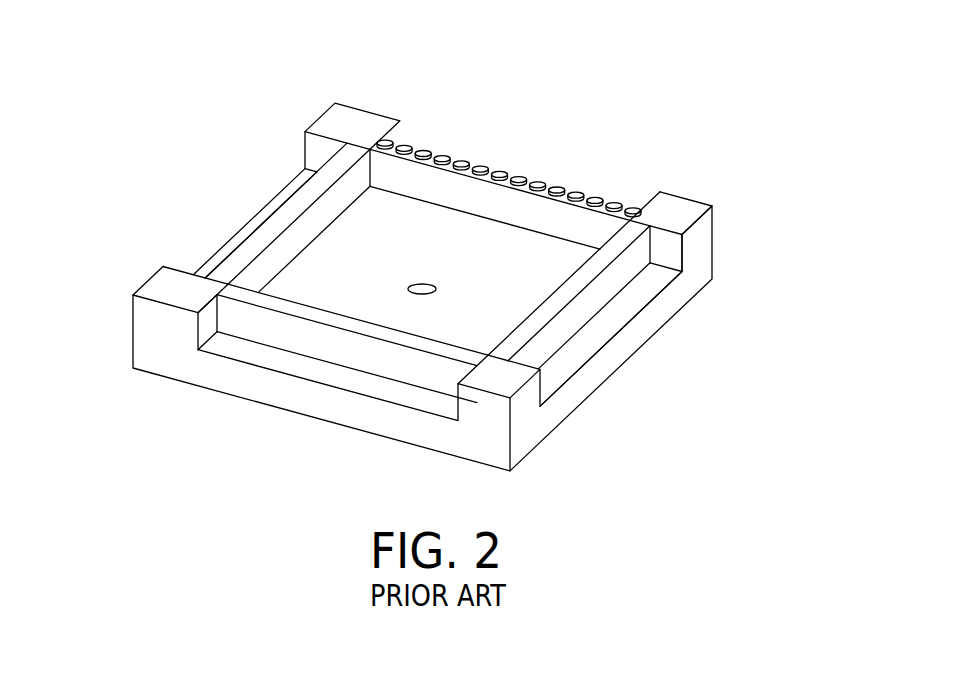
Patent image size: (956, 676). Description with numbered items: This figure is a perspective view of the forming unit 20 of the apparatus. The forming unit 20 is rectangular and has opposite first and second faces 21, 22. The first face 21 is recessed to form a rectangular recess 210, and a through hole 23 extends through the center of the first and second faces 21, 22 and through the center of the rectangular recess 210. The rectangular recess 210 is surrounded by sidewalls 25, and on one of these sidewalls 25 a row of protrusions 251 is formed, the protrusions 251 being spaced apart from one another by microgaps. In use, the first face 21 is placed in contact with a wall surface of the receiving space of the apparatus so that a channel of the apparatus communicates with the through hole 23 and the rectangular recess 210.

The forming unit 20 is at (369, 203).
The first face 21 is at (673, 210).
The second face 22 is at (657, 330).
The through hole 23 is at (419, 287).
The sidewalls 25 is at (277, 243).
The protrusions 251 is at (523, 170).
The rectangular recess 210 is at (503, 291).